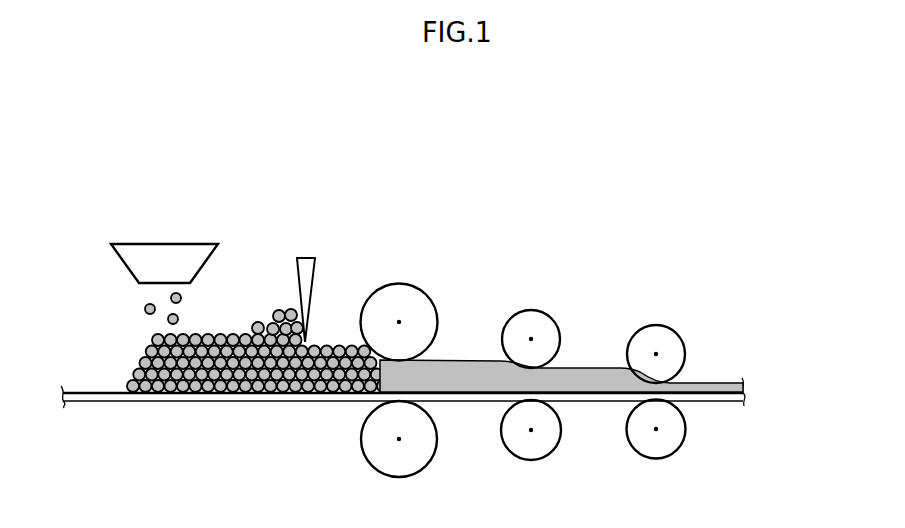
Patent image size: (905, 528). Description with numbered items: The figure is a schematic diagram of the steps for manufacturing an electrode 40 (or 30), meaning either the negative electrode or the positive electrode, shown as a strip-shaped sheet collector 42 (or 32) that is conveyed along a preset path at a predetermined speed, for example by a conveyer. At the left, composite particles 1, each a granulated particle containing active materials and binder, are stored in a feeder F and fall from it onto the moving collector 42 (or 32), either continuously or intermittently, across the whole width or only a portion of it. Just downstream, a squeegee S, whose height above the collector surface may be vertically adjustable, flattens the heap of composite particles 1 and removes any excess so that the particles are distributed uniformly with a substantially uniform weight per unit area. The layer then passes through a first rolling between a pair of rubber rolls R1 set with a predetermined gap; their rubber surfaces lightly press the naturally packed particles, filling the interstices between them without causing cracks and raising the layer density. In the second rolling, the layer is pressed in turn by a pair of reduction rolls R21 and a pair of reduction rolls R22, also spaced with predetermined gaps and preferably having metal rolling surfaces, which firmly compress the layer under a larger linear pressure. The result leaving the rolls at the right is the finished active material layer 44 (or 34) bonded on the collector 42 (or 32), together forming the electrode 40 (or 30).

The composite particles 1 is at (157, 338).
The feeder F is at (187, 242).
The squeegee S is at (305, 257).
The rubber rolls R1 is at (418, 286).
The reduction rolls R21 is at (550, 316).
The reduction rolls R22 is at (670, 329).
The electrode 40 is at (448, 341).
The electrode 30 is at (448, 341).
The negative electrode collector 42 is at (448, 368).
The positive electrode collector 32 is at (80, 393).
The active material layer 44 is at (626, 329).
The active material layer 34 is at (452, 362).